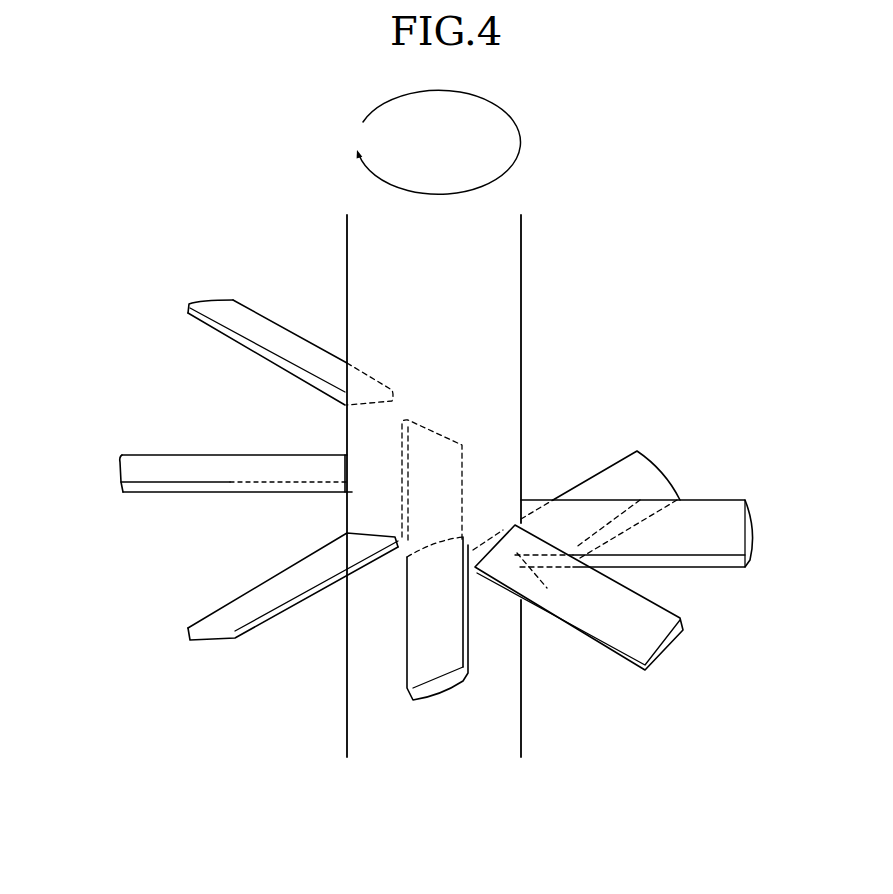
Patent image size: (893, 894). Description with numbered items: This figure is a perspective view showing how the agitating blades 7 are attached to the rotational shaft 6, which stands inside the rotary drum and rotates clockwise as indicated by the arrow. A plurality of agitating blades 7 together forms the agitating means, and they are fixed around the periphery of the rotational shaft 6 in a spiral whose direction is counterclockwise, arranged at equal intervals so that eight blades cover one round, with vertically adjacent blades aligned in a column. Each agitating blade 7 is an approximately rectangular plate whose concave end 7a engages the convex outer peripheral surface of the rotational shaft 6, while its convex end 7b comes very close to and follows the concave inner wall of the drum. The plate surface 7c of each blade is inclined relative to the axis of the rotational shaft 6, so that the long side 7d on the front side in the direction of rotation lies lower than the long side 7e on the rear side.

The rotational shaft 6 is at (489, 290).
The agitating blade 7 is at (258, 305).
The concave end 7a is at (345, 467).
The convex end 7b is at (120, 470).
The plate surface 7c is at (175, 470).
The long side on the front side 7d is at (215, 455).
The long side on the rear side 7e is at (230, 493).